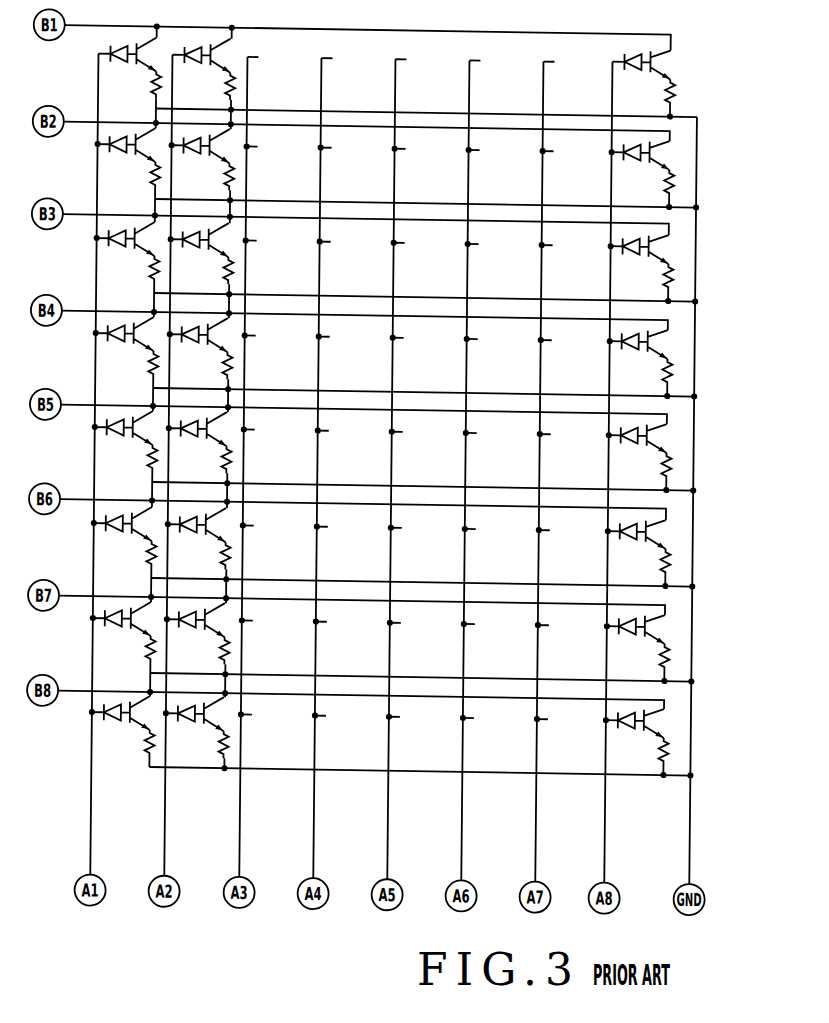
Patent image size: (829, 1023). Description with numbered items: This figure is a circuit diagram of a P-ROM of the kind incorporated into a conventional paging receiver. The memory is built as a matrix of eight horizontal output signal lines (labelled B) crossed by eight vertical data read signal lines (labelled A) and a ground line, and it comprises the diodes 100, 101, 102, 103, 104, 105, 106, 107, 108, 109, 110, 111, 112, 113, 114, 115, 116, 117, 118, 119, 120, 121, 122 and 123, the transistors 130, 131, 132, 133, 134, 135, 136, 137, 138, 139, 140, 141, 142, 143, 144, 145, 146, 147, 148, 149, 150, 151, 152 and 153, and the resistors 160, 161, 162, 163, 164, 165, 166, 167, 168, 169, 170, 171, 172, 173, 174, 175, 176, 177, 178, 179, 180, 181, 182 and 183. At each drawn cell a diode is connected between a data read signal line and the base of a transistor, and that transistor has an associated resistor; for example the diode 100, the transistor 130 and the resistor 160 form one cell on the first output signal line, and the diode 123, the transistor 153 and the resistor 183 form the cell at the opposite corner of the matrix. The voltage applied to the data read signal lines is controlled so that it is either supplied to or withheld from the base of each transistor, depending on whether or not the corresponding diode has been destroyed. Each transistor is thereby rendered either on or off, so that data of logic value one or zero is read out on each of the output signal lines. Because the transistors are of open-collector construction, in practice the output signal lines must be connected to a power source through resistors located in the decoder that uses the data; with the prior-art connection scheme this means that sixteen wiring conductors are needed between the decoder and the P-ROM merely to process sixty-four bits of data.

The diode 100 is at (100, 63).
The diode 101 is at (99, 154).
The diode 102 is at (98, 248).
The diode 103 is at (97, 343).
The diode 104 is at (96, 437).
The diode 105 is at (95, 533).
The diode 106 is at (94, 628).
The diode 107 is at (93, 722).
The diode 108 is at (191, 73).
The diode 109 is at (190, 163).
The diode 110 is at (189, 257).
The diode 111 is at (188, 352).
The diode 112 is at (187, 446).
The diode 113 is at (186, 542).
The diode 114 is at (185, 637).
The diode 115 is at (184, 731).
The diode 116 is at (614, 72).
The diode 117 is at (613, 163).
The diode 118 is at (612, 257).
The diode 119 is at (611, 352).
The diode 120 is at (610, 446).
The diode 121 is at (609, 542).
The diode 122 is at (608, 637).
The diode 123 is at (607, 731).
The transistor 130 is at (137, 65).
The transistor 131 is at (136, 155).
The transistor 132 is at (135, 249).
The transistor 133 is at (134, 344).
The transistor 134 is at (133, 438).
The transistor 135 is at (132, 534).
The transistor 136 is at (131, 629).
The transistor 137 is at (130, 723).
The transistor 138 is at (247, 55).
The transistor 139 is at (246, 146).
The transistor 140 is at (245, 240).
The transistor 141 is at (245, 335).
The transistor 142 is at (244, 429).
The transistor 143 is at (243, 525).
The transistor 144 is at (242, 620).
The transistor 145 is at (241, 714).
The transistor 146 is at (673, 65).
The transistor 147 is at (672, 156).
The transistor 148 is at (671, 250).
The transistor 149 is at (671, 345).
The transistor 150 is at (670, 439).
The transistor 151 is at (669, 535).
The transistor 152 is at (668, 630).
The transistor 153 is at (667, 724).
The resistor 160 is at (138, 95).
The resistor 161 is at (137, 185).
The resistor 162 is at (136, 279).
The resistor 163 is at (136, 374).
The resistor 164 is at (135, 468).
The resistor 165 is at (134, 564).
The resistor 166 is at (133, 659).
The resistor 167 is at (132, 753).
The resistor 168 is at (255, 87).
The resistor 169 is at (254, 177).
The resistor 170 is at (253, 271).
The resistor 171 is at (252, 366).
The resistor 172 is at (251, 460).
The resistor 173 is at (250, 556).
The resistor 174 is at (249, 651).
The resistor 175 is at (248, 745).
The resistor 176 is at (650, 98).
The resistor 177 is at (650, 188).
The resistor 178 is at (649, 282).
The resistor 179 is at (648, 377).
The resistor 180 is at (647, 471).
The resistor 181 is at (646, 567).
The resistor 182 is at (645, 662).
The resistor 183 is at (644, 756).